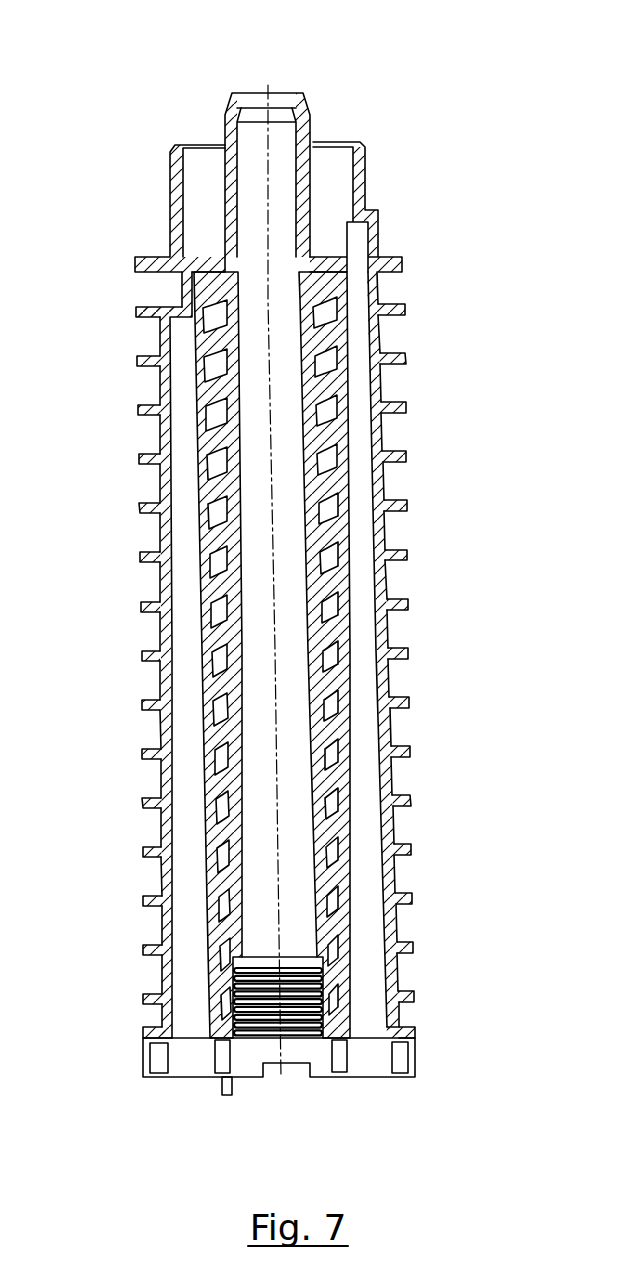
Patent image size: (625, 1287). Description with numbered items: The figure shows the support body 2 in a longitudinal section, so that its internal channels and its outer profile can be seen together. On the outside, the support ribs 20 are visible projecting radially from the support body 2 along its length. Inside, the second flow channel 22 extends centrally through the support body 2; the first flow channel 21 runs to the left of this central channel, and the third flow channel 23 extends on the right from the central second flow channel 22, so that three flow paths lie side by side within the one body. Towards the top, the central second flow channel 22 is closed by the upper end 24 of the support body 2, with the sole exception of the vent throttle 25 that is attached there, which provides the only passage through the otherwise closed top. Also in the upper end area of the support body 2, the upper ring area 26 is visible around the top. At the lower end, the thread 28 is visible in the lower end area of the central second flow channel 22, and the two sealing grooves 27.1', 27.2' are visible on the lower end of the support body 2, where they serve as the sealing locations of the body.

The support body 2 is at (393, 113).
The support ribs 20 is at (405, 460).
The first flow channel 21 is at (185, 835).
The second flow channel 22 is at (290, 668).
The third flow channel 23 is at (372, 882).
The upper end 24 is at (235, 100).
The vent throttle 25 is at (264, 92).
The upper ring area 26 is at (171, 178).
The sealing groove 27.1' is at (184, 1119).
The sealing groove 27.2' is at (404, 1108).
The thread 28 is at (294, 1040).